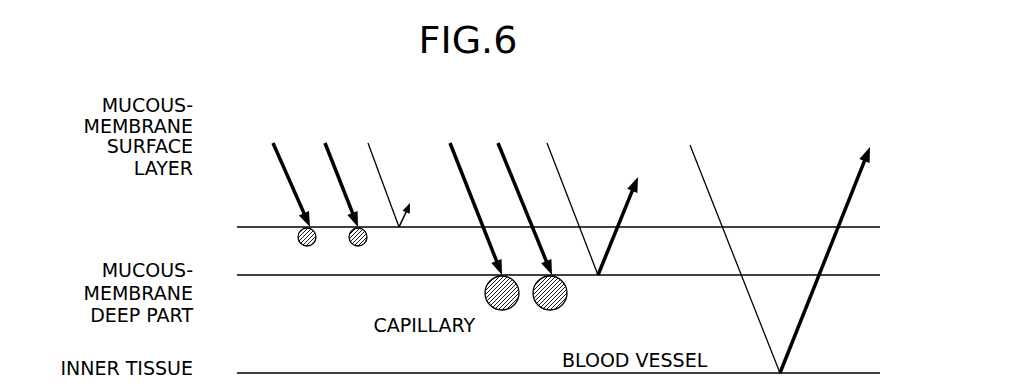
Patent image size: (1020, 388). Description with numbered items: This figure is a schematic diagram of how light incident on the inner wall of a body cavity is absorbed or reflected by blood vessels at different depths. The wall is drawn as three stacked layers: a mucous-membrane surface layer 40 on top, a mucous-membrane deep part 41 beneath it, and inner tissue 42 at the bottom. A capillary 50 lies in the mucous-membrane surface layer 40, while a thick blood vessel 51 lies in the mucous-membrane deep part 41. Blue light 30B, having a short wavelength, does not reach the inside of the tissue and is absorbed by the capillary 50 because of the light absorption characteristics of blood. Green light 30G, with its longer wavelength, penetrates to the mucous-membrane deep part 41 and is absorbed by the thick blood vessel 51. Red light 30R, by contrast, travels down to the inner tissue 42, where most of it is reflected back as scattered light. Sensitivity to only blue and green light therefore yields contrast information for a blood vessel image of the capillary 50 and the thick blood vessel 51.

The blue light 30B is at (268, 141).
The green light 30G is at (563, 141).
The red light 30R is at (771, 245).
The mucous-membrane surface layer 40 is at (252, 227).
The mucous-membrane deep part 41 is at (252, 275).
The inner tissue 42 is at (252, 373).
The capillary 50 is at (298, 248).
The thick blood vessel 51 is at (485, 314).